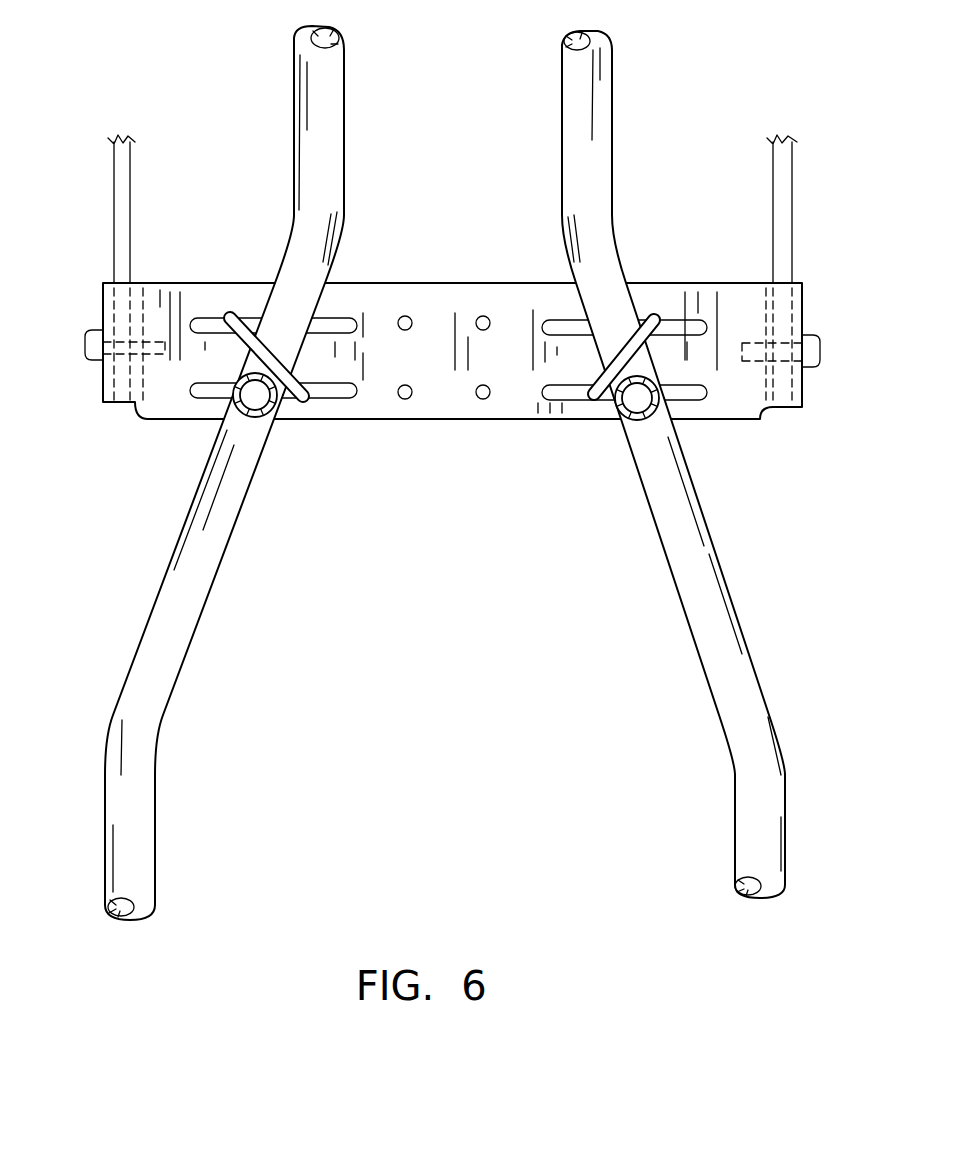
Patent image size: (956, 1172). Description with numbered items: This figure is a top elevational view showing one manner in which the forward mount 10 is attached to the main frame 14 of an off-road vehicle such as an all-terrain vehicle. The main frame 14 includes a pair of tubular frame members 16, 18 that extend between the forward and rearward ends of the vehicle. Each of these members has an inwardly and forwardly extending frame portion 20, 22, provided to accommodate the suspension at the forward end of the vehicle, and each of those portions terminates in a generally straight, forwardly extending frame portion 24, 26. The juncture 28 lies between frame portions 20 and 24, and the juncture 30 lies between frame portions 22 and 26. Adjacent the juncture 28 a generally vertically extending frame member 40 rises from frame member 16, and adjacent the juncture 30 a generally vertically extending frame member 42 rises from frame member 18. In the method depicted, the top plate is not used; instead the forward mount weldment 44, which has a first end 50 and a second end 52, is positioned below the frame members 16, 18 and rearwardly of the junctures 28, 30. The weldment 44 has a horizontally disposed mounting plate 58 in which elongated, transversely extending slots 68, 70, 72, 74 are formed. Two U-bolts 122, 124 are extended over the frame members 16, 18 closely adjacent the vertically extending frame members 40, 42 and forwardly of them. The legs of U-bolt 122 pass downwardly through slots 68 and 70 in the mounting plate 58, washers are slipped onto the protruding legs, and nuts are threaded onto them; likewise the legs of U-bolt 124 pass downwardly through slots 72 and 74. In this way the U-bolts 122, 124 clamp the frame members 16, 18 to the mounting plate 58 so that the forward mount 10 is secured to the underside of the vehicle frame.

The forward mount 10 is at (468, 470).
The main frame 14 is at (445, 470).
The tubular frame member 16 is at (731, 812).
The tubular frame member 18 is at (158, 856).
The frame portion 20 is at (688, 648).
The frame portion 22 is at (208, 657).
The frame portion 24 is at (639, 214).
The frame portion 26 is at (332, 210).
The juncture 28 is at (618, 250).
The juncture 30 is at (345, 231).
The vertically extending frame member 40 is at (640, 419).
The vertically extending frame member 42 is at (236, 424).
The forward mount weldment 44 is at (468, 351).
The first end 50 is at (820, 320).
The second end 52 is at (93, 322).
The mounting plate 58 is at (410, 380).
The slot 68 is at (759, 270).
The slot 70 is at (697, 404).
The slot 72 is at (203, 318).
The slot 74 is at (330, 397).
The U-bolt 122 is at (585, 405).
The U-bolt 124 is at (297, 402).